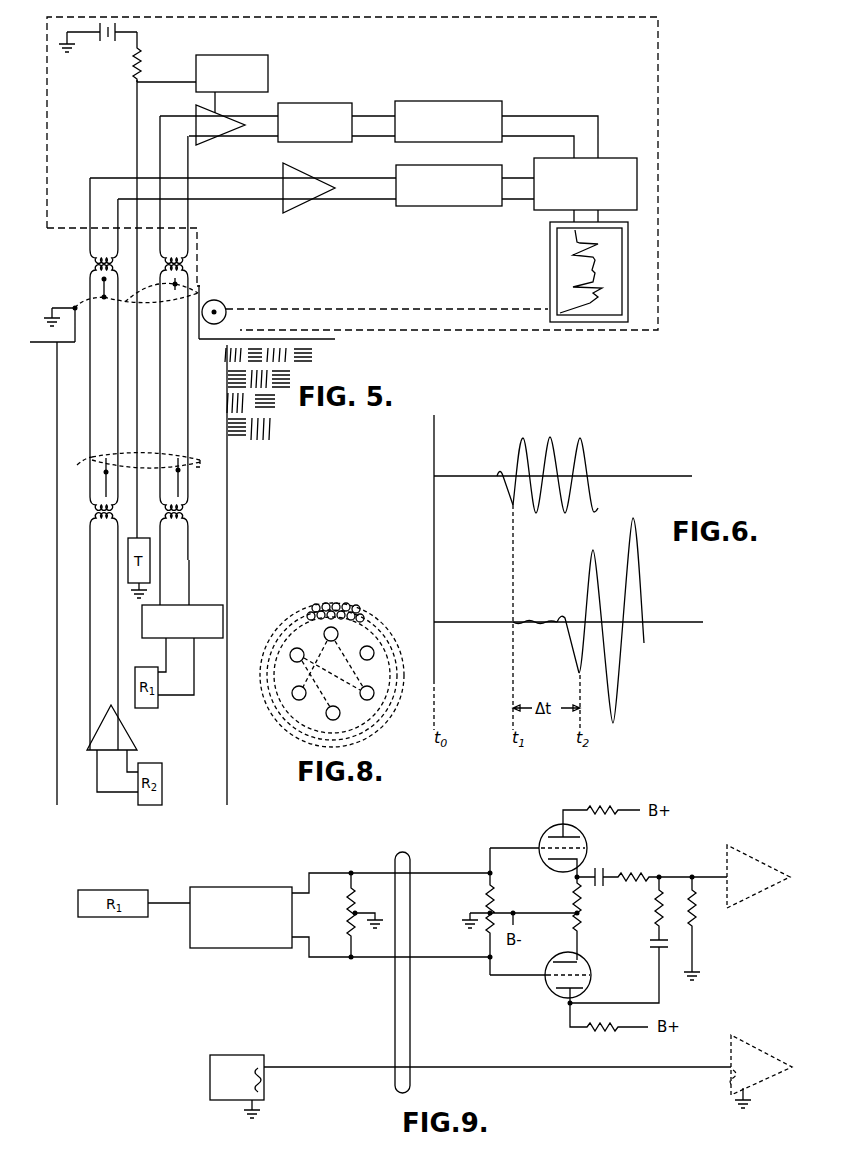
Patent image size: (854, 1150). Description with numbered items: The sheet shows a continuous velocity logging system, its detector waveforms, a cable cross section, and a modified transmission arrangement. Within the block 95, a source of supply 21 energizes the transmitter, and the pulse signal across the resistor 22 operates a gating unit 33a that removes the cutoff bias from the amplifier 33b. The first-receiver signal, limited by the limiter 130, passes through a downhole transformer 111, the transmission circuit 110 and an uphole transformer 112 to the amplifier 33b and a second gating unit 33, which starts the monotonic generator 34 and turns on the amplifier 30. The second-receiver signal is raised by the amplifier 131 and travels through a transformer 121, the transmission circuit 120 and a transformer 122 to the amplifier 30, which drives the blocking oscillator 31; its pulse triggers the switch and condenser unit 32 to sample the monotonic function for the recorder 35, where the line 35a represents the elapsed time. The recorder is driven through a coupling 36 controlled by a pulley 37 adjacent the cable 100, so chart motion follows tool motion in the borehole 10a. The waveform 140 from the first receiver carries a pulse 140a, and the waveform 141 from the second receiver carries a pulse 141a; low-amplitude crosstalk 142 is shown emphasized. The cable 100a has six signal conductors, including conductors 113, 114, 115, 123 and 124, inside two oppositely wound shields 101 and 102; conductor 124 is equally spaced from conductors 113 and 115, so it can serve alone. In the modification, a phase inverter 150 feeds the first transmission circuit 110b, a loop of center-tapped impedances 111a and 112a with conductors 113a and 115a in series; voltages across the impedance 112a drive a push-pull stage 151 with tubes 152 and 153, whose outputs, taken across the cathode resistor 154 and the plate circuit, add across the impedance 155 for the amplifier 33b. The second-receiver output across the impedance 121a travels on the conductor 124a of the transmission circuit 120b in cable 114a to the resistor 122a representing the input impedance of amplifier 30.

In FIG. 5, the borehole 10a is at (229, 456).
In FIG. 5, the source of supply 21 is at (108, 45).
In FIG. 5, the resistor 22 is at (147, 57).
In FIG. 5, the amplifier 30 is at (300, 213).
In FIG. 9, the amplifier 30 is at (752, 1048).
In FIG. 5, the blocking oscillator 31 is at (445, 208).
In FIG. 5, the switch and condenser unit 32 is at (533, 210).
In FIG. 5, the second gating unit 33 is at (330, 103).
In FIG. 5, the gating unit 33a is at (268, 68).
In FIG. 5, the amplifier 33b is at (210, 145).
In FIG. 9, the amplifier 33b is at (747, 853).
In FIG. 5, the monotonic generator 34 is at (468, 100).
In FIG. 5, the recorder 35 is at (550, 260).
In FIG. 5, the line 35a is at (590, 281).
In FIG. 5, the coupling 36 is at (400, 309).
In FIG. 5, the pulley 37 is at (223, 303).
In FIG. 5, the block 95 is at (660, 83).
In FIG. 5, the cable 100 is at (201, 287).
In FIG. 8, the cable 100a is at (357, 600).
In FIG. 8, the shield 101 is at (382, 634).
In FIG. 8, the shield 102 is at (397, 652).
In FIG. 5, the transmission circuit 110 is at (186, 377).
In FIG. 9, the first transmission circuit 110b is at (445, 907).
In FIG. 5, the transformer 111 is at (191, 512).
In FIG. 9, the impedance 111a is at (358, 897).
In FIG. 5, the transformer 112 is at (190, 263).
In FIG. 9, the impedance 112a is at (485, 935).
In FIG. 8, the conductor 113 is at (374, 694).
In FIG. 9, the conductor 113a is at (422, 872).
In FIG. 8, the conductor 114 is at (348, 722).
In FIG. 9, the cable 114a is at (410, 1017).
In FIG. 8, the conductor 115 is at (296, 700).
In FIG. 9, the conductor 115a is at (427, 958).
In FIG. 5, the transmission circuit 120 is at (116, 377).
In FIG. 9, the transmission circuit 120b is at (513, 1065).
In FIG. 5, the transformer 121 is at (85, 512).
In FIG. 9, the impedance 121a is at (268, 1084).
In FIG. 5, the transformer 122 is at (89, 262).
In FIG. 9, the resistor 122a is at (740, 1082).
In FIG. 8, the conductor 123 is at (290, 654).
In FIG. 8, the conductor 124 is at (312, 628).
In FIG. 9, the conductor 124a is at (307, 1074).
In FIG. 5, the limiter 130 is at (223, 620).
In FIG. 5, the amplifier 131 is at (130, 737).
In FIG. 6, the waveform 140 is at (521, 440).
In FIG. 6, the pulse 140a is at (509, 501).
In FIG. 6, the waveform 141 is at (622, 677).
In FIG. 6, the pulse 141a is at (575, 658).
In FIG. 6, the crosstalk 142 is at (522, 621).
In FIG. 9, the phase inverter 150 is at (223, 888).
In FIG. 9, the push-pull stage 151 is at (574, 800).
In FIG. 9, the tube 152 is at (588, 840).
In FIG. 9, the tube 153 is at (591, 977).
In FIG. 9, the cathode resistor 154 is at (576, 893).
In FIG. 9, the impedance 155 is at (691, 920).